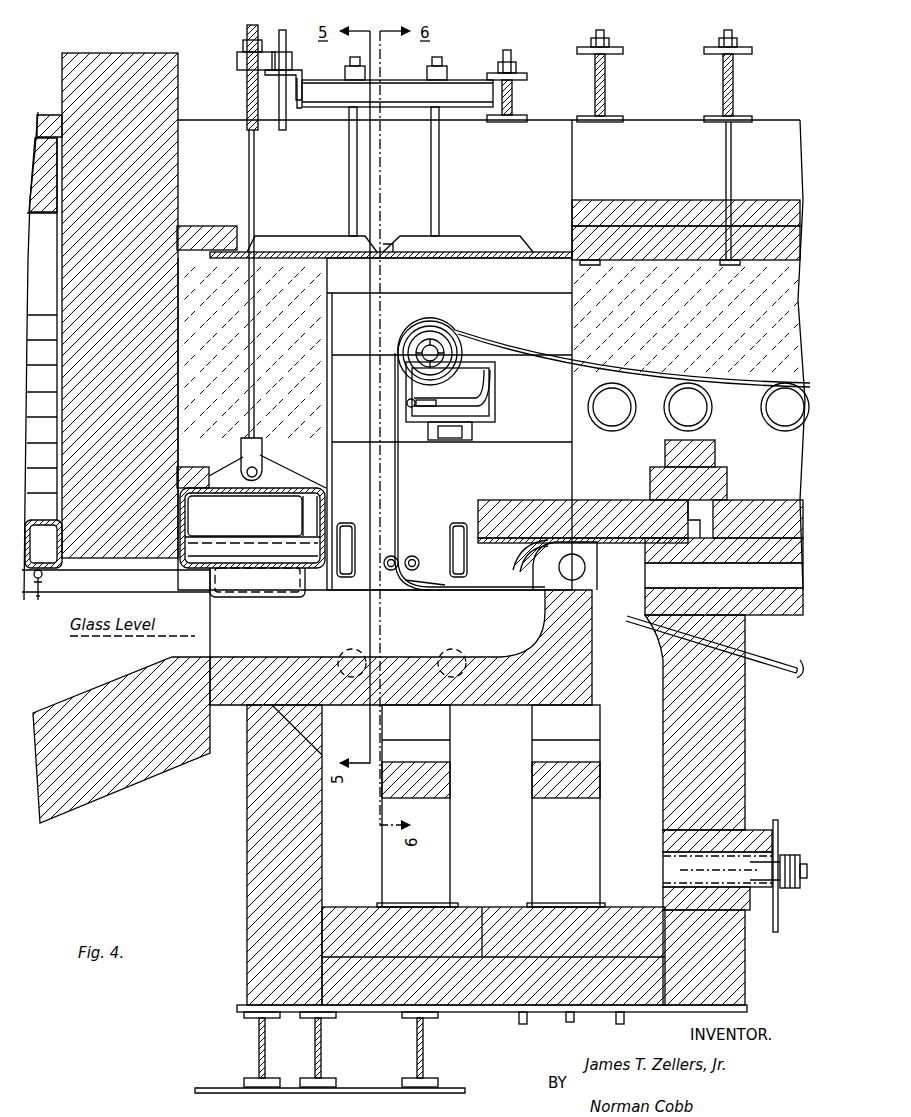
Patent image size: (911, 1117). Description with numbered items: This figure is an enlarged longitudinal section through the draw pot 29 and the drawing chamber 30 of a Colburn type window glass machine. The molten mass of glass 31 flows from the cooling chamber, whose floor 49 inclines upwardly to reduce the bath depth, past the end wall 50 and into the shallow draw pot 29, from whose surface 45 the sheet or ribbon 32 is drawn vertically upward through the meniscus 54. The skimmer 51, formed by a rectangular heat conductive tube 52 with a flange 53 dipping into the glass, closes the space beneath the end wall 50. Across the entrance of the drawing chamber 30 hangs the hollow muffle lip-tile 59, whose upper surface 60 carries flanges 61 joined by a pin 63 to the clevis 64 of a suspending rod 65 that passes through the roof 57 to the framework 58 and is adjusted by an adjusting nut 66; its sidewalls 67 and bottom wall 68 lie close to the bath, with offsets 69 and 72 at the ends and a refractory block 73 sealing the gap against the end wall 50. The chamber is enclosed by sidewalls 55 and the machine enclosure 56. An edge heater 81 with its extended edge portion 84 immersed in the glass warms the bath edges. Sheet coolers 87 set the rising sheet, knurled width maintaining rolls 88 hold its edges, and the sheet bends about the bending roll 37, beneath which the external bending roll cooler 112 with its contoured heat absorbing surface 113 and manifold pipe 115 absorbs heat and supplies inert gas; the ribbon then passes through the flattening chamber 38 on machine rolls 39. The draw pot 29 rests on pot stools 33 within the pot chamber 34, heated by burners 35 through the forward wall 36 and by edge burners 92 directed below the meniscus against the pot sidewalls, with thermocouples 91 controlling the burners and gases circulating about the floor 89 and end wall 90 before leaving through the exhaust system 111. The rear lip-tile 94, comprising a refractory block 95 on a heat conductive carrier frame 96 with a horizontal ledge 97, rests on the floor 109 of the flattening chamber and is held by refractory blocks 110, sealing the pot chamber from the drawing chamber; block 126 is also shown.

The draw pot 29 is at (492, 707).
The drawing chamber 30 is at (312, 300).
The mass of glass 31 is at (76, 667).
The sheet or ribbon 32 is at (745, 380).
The pot stools 33 is at (418, 732).
The pot chamber 34 is at (748, 725).
The burners 35 is at (786, 852).
The forward wall 36 is at (720, 762).
The bending roll 37 is at (448, 350).
The flattening chamber 38 is at (660, 170).
The machine rolls 39 is at (656, 420).
The surface of the molten bath 45 is at (62, 640).
The floor 49 is at (100, 770).
The end wall 50 is at (105, 85).
The skimmer 51 is at (40, 600).
The tube 52 is at (62, 563).
The flange 53 is at (46, 592).
The meniscus 54 is at (406, 582).
The sidewalls 55 is at (403, 290).
The machine enclosure 56 is at (545, 328).
The roof 57 is at (463, 252).
The framework 58 is at (462, 80).
The hollow muffle lip-tile 59 is at (270, 447).
The upper surface 60 is at (233, 493).
The flanges 61 is at (237, 468).
The pin 63 is at (258, 472).
The clevis 64 is at (263, 456).
The suspending rod 65 is at (249, 301).
The adjusting nut 66 is at (243, 47).
The sidewalls 67 is at (188, 505).
The bottom wall 68 is at (237, 566).
The reduced portions or offsets 69 is at (224, 548).
The offset 72 is at (305, 530).
The refractory block 73 is at (192, 480).
The edge heater 81 is at (252, 580).
The extended edge portion 84 is at (288, 600).
The sheet coolers 87 is at (346, 523).
The knurled width maintaining rolls 88 is at (390, 556).
The floor 89 is at (343, 690).
The end wall 90 is at (550, 610).
The thermocouples 91 is at (780, 664).
The edge burners 92 is at (346, 648).
The rear lip-tile 94 is at (528, 500).
The refractory block 95 is at (598, 528).
The carrier frame 96 is at (600, 546).
The horizontal ledge 97 is at (518, 556).
The floor 109 is at (760, 516).
The refractory blocks 110 is at (720, 482).
The exhaust system 111 is at (680, 574).
The external bending roll cooler 112 is at (486, 405).
The contoured heat absorbing surface 113 is at (482, 385).
The manifold pipe 115 is at (406, 403).
The block 126 is at (780, 246).